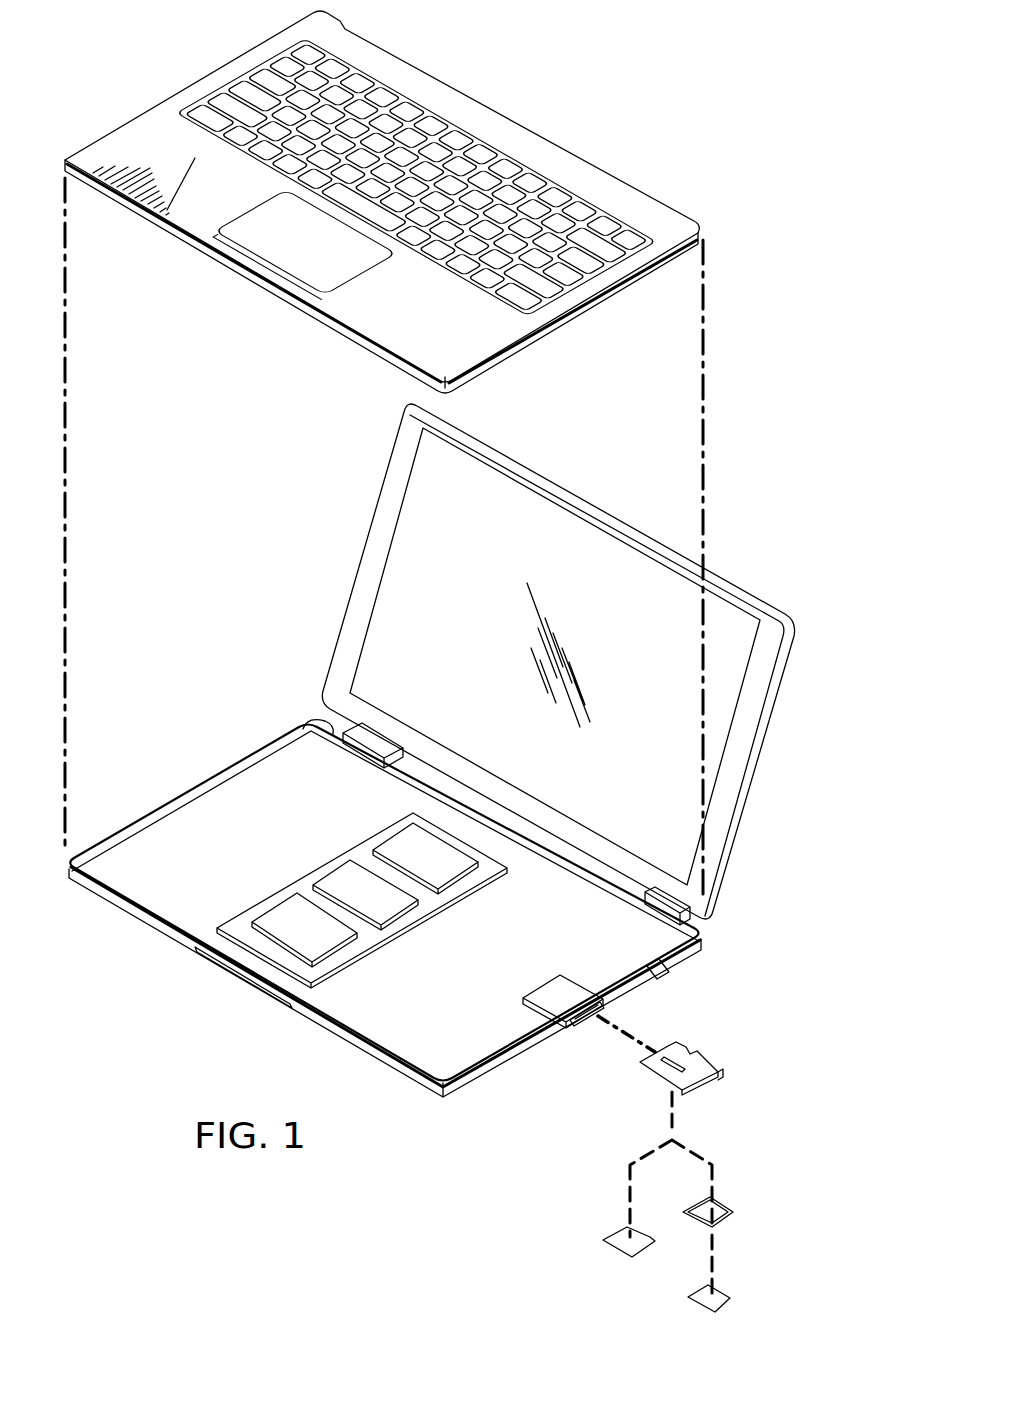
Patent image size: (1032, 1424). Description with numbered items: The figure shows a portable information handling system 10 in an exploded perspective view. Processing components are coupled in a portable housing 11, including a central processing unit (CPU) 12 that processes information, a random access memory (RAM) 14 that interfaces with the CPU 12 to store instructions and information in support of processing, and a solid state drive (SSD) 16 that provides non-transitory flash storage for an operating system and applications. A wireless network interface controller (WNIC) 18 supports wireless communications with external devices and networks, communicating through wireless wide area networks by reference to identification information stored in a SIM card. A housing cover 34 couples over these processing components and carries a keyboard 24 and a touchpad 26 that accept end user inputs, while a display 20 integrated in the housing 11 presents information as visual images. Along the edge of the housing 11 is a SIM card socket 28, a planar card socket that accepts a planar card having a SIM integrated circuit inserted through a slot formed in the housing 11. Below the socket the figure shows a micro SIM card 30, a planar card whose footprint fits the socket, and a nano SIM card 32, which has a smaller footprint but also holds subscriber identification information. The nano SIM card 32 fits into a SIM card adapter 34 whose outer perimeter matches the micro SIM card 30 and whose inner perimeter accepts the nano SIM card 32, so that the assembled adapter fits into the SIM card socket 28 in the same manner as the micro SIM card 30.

The portable information handling system 10 is at (815, 147).
The portable housing 11 is at (266, 578).
The central processing unit (CPU) 12 is at (392, 847).
The random access memory (RAM) 14 is at (332, 882).
The solid state drive (SSD) 16 is at (272, 915).
The wireless network interface controller (WNIC) 18 is at (538, 983).
The display 20 is at (567, 528).
The keyboard 24 is at (530, 165).
The touchpad 26 is at (327, 261).
The SIM card socket 28 is at (587, 1020).
The micro SIM card 30 is at (615, 1248).
The nano SIM card 32 is at (733, 1302).
The housing cover / SIM card adapter 34 is at (766, 1200).